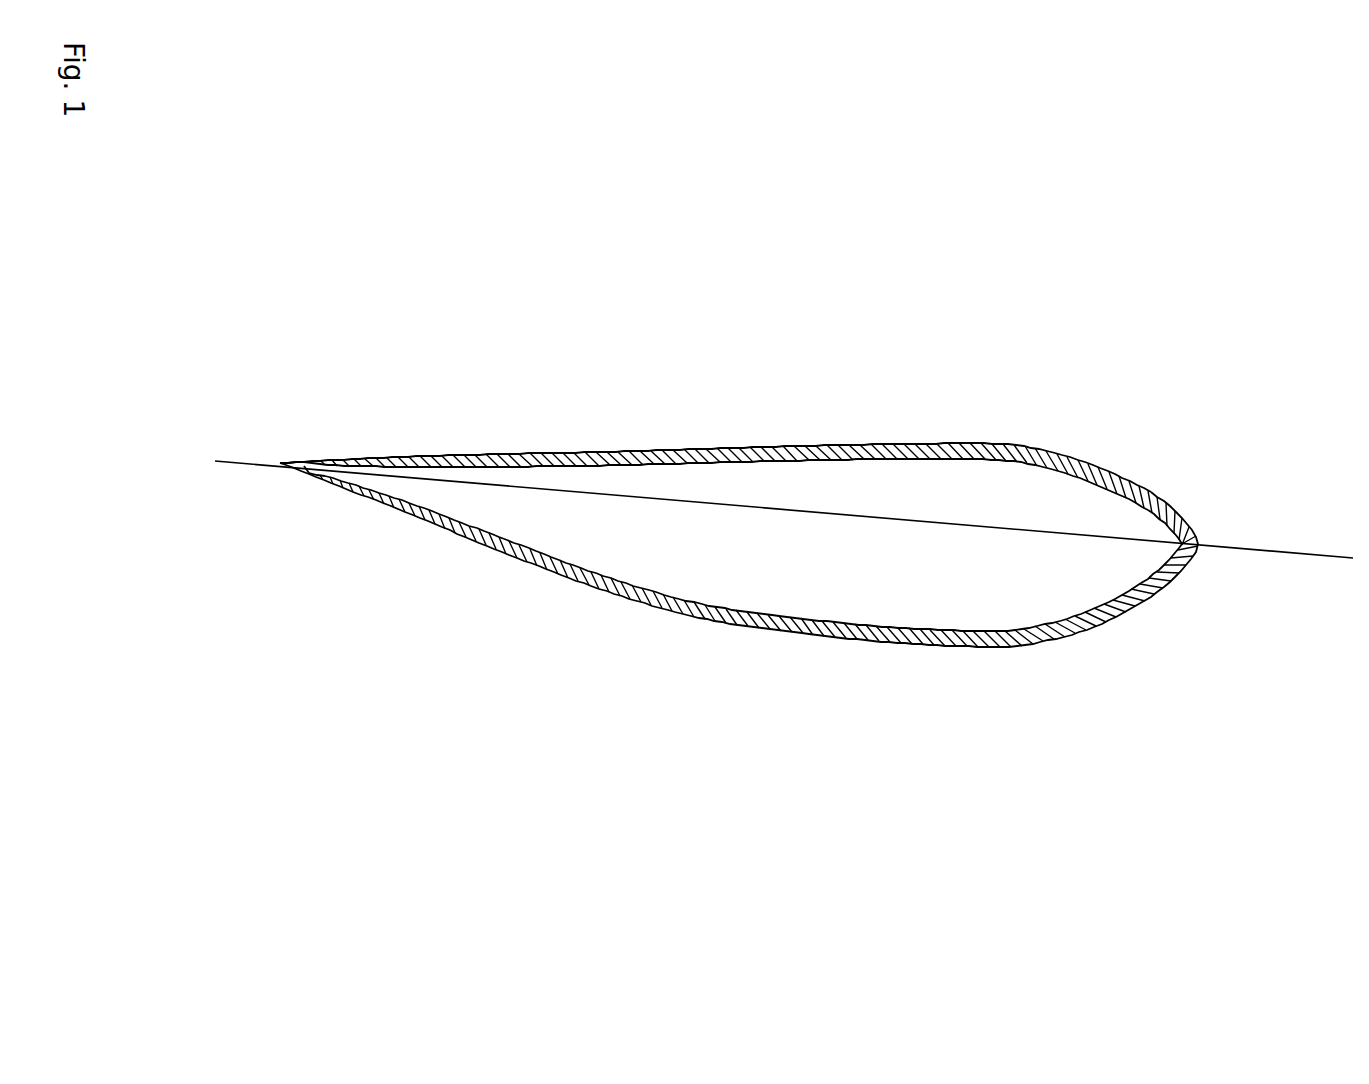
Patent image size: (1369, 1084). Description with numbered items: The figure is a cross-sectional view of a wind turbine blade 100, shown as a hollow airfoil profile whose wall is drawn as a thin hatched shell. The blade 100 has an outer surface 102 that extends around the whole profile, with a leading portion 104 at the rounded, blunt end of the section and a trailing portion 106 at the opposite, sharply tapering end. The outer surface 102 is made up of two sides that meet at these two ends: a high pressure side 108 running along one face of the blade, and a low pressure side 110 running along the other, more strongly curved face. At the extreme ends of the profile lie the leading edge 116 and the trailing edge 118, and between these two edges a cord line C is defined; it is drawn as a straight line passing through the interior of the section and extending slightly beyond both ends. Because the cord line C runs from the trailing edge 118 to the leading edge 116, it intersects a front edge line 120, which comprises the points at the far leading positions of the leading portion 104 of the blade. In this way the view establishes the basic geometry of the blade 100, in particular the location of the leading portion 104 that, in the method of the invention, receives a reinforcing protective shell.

The wind turbine blade 100 is at (318, 783).
The outer surface 102 is at (732, 445).
The leading portion 104 is at (1192, 500).
The trailing portion 106 is at (278, 427).
The high pressure side 108 is at (902, 445).
The low pressure side 110 is at (723, 618).
The leading edge 116 is at (1200, 548).
The trailing edge 118 is at (280, 473).
The front edge line 120 is at (1200, 548).
The cord line C is at (1337, 560).